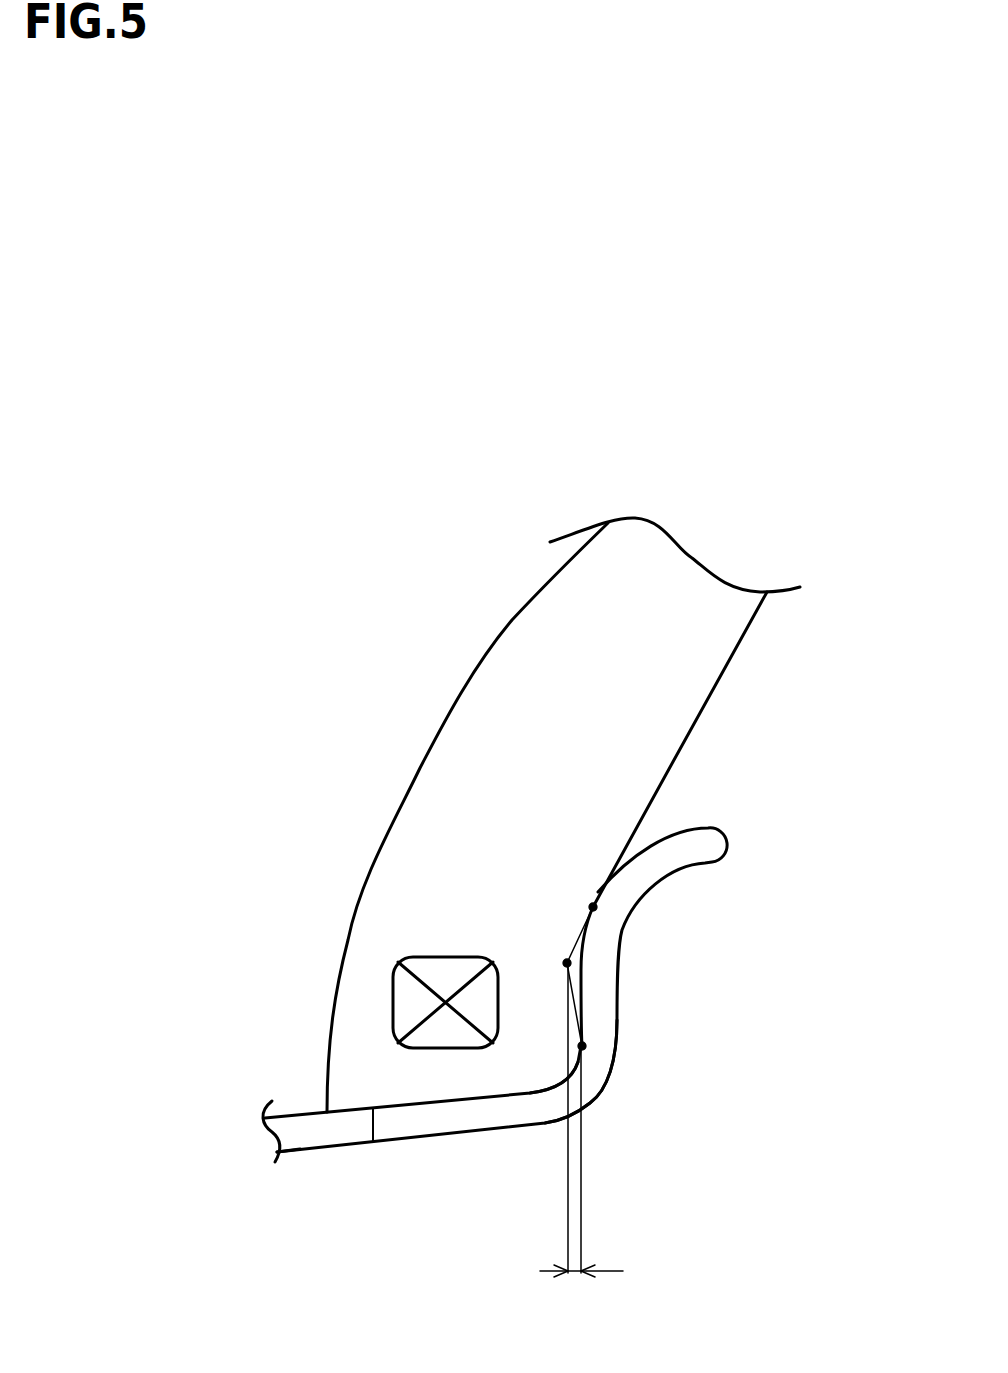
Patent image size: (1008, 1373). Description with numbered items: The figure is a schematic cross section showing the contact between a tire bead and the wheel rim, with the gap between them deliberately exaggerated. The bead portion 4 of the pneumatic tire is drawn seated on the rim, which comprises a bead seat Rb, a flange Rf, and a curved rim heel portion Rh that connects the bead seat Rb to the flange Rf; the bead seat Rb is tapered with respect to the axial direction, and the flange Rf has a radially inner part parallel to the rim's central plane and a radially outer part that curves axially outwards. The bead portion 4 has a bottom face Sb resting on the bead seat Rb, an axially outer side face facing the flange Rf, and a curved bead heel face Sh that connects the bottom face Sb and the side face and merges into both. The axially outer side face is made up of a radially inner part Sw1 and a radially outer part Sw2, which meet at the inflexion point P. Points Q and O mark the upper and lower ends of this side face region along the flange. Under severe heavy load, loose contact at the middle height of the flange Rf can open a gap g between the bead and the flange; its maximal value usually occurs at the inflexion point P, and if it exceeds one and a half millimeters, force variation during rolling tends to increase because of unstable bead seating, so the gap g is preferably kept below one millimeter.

The bead portion 4 is at (342, 861).
The point Q is at (580, 893).
The inflexion point P is at (553, 960).
The point O is at (557, 1052).
The radially outer part of the axially outer side face Sw2 is at (635, 825).
The radially inner part of the axially outer side face Sw1 is at (573, 998).
The flange Rf is at (583, 960).
The bead heel face Sh is at (580, 1067).
The rim heel portion Rh is at (590, 1103).
The bottom face Sb is at (373, 1140).
The bead seat Rb is at (293, 1143).
The gap g is at (578, 1275).